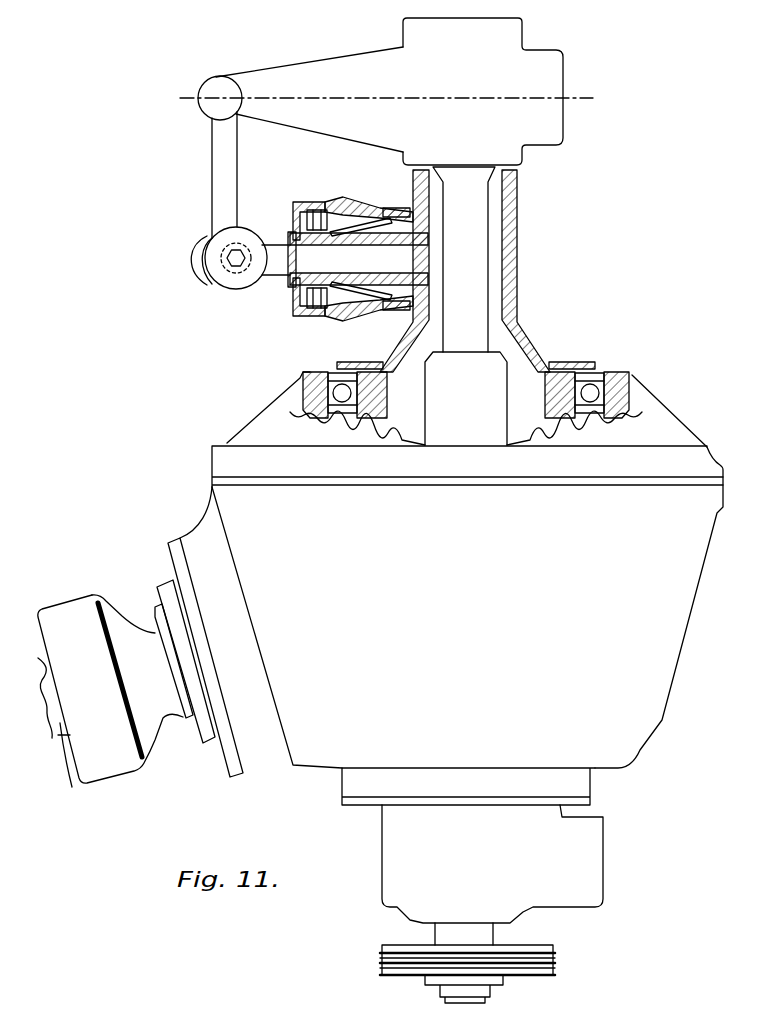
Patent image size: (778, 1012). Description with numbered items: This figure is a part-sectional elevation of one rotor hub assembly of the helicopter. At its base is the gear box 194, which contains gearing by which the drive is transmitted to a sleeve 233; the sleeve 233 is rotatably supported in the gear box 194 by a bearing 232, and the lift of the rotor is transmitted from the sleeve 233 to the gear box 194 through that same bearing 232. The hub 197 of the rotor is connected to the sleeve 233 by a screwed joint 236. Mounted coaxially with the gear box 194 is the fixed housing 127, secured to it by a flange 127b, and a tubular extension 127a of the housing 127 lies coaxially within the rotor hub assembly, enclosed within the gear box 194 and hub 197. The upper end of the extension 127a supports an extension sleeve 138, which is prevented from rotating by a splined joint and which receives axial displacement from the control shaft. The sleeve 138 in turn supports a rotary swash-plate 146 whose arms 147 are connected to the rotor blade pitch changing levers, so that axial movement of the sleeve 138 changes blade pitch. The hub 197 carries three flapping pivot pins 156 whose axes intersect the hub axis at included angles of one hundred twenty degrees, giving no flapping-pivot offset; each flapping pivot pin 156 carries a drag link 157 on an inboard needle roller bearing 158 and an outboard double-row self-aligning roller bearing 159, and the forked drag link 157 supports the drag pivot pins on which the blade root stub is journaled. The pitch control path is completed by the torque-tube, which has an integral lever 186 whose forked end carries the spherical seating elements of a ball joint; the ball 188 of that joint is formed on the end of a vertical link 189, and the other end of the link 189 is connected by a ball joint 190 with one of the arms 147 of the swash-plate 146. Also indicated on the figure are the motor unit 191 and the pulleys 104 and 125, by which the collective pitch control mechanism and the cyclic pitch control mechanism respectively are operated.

The pulley 104 is at (547, 953).
The pulley 125 is at (547, 970).
The fixed housing 127 is at (492, 864).
The tubular extension 127a is at (497, 360).
The flange 127b is at (342, 802).
The extension sleeve 138 is at (460, 222).
The rotary swash-plate 146 is at (430, 82).
The arm 147 is at (298, 82).
The flapping pivot pin 156 is at (363, 277).
The drag link 157 is at (343, 200).
The inboard needle roller bearing 158 is at (385, 193).
The outboard double-row self-aligning roller bearing 159 is at (312, 205).
The lever 186 is at (237, 282).
The ball 188 is at (205, 292).
The vertical link 189 is at (220, 170).
The ball joint 190 is at (215, 88).
The motor 191 is at (112, 707).
The gear box 194 is at (183, 526).
The hub 197 is at (517, 277).
The bearing 232 is at (563, 385).
The sleeve 233 is at (543, 378).
The screwed joint 236 is at (378, 412).